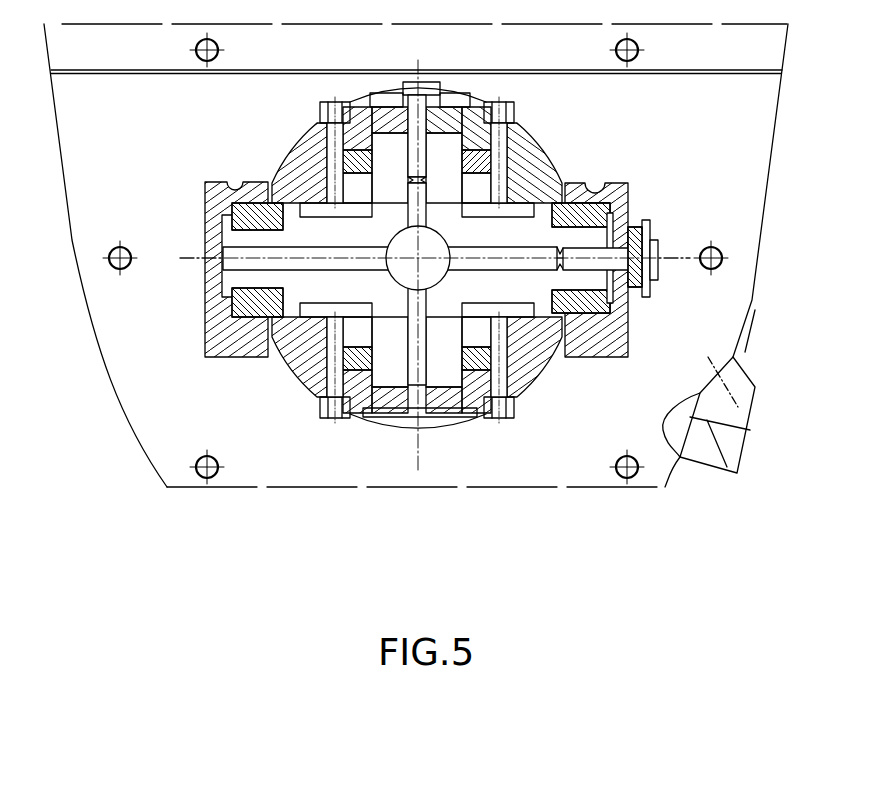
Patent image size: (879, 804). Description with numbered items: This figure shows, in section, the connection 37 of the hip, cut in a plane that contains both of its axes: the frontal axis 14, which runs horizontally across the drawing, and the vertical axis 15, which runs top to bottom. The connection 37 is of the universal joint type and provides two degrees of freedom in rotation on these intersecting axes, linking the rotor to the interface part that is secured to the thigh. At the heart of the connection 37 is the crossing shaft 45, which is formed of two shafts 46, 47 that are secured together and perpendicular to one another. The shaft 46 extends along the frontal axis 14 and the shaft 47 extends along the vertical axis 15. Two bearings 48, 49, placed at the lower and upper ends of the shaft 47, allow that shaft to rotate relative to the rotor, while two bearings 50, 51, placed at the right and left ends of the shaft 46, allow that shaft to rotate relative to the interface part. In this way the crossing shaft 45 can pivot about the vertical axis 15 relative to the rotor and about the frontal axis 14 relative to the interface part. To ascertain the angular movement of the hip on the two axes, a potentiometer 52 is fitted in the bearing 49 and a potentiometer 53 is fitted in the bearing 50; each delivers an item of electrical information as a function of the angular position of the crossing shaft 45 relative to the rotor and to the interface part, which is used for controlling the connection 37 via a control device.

The frontal axis 14 is at (665, 258).
The vertical axis 15 is at (420, 437).
The connection 37 is at (348, 501).
The crossing shaft 45 is at (431, 267).
The shaft 46 is at (537, 296).
The shaft 47 is at (458, 356).
The bearing 48 is at (353, 417).
The bearing 49 is at (318, 128).
The bearing 50 is at (628, 333).
The bearing 51 is at (204, 321).
The potentiometer 52 is at (443, 92).
The potentiometer 53 is at (648, 292).